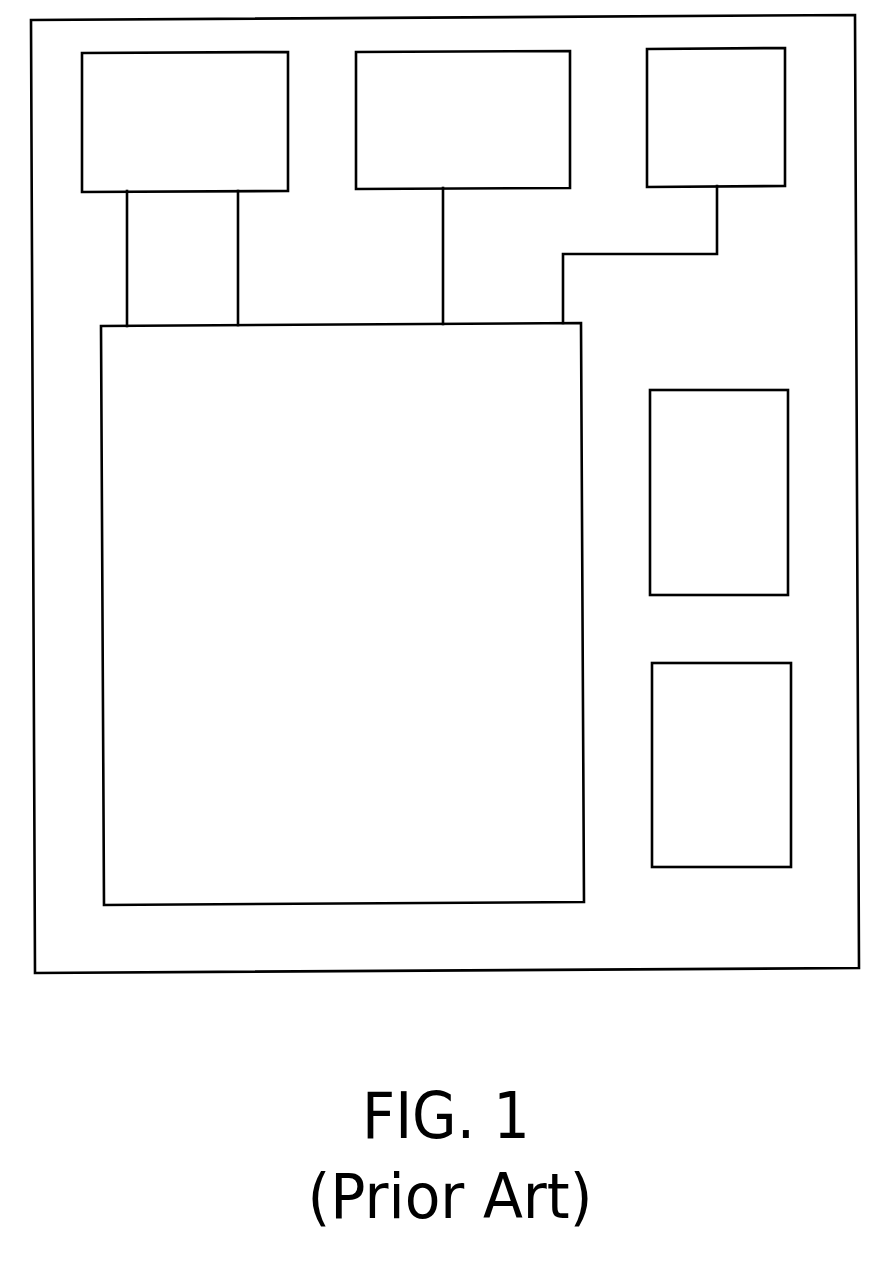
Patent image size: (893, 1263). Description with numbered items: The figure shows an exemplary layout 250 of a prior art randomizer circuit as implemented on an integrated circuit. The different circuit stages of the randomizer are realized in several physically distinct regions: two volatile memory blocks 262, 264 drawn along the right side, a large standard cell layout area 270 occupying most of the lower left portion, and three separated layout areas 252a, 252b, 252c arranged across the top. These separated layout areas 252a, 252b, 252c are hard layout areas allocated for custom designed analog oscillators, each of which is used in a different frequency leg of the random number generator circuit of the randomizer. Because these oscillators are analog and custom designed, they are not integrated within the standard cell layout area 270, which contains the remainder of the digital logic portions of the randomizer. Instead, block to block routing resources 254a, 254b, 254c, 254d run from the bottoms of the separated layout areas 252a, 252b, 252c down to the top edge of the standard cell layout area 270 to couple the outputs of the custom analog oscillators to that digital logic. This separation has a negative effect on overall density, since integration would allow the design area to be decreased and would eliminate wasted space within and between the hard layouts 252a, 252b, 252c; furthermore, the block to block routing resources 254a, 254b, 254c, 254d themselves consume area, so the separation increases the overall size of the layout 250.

The layout 250 is at (445, 494).
The separated layout area 252a is at (185, 122).
The separated layout area 252b is at (463, 120).
The separated layout area 252c is at (716, 117).
The block to block routing resource 254a is at (717, 233).
The block to block routing resource 254b is at (442, 245).
The block to block routing resource 254c is at (237, 245).
The block to block routing resource 254d is at (126, 245).
The volatile memory block 262 is at (719, 492).
The volatile memory block 264 is at (721, 765).
The standard cell layout area 270 is at (342, 614).